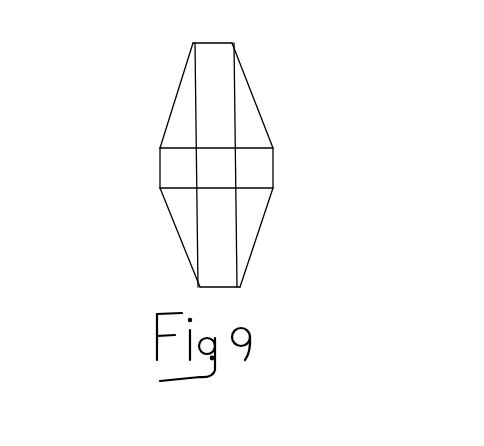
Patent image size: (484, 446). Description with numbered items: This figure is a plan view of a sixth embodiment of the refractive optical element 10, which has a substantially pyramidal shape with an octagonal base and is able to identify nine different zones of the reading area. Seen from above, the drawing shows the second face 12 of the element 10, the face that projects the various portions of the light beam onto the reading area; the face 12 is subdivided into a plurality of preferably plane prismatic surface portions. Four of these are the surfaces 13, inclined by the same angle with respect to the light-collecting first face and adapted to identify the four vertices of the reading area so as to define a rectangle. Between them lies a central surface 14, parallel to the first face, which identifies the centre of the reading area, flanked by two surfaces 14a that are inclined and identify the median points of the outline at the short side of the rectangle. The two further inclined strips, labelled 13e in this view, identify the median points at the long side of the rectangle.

The refractive optical element 10 is at (225, 171).
The second face 12 is at (175, 80).
The surface portions 13 is at (176, 130).
The facet edges 13e is at (228, 123).
The central surface 14 is at (230, 184).
The surfaces 14a is at (177, 172).